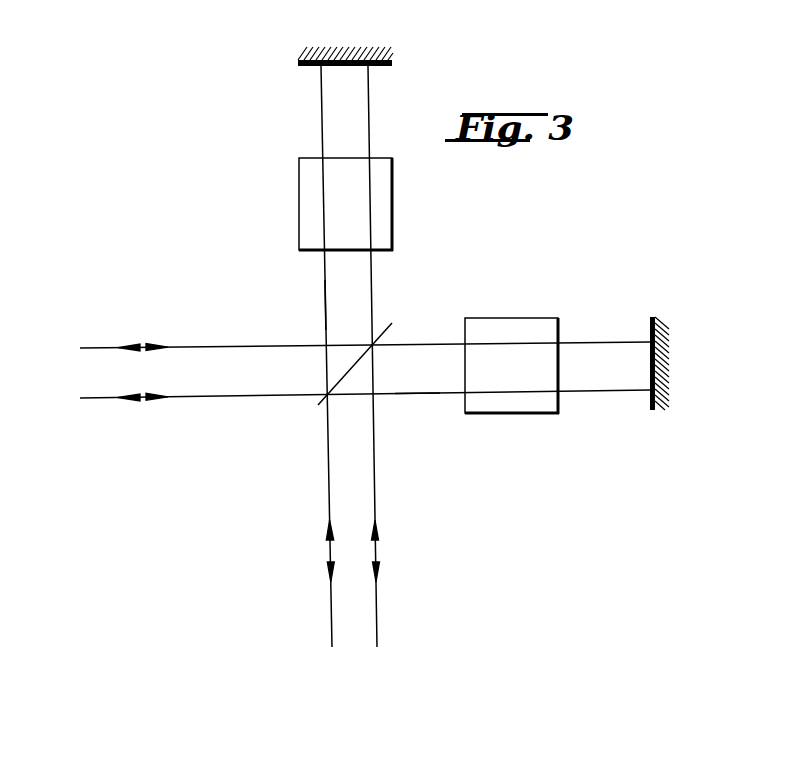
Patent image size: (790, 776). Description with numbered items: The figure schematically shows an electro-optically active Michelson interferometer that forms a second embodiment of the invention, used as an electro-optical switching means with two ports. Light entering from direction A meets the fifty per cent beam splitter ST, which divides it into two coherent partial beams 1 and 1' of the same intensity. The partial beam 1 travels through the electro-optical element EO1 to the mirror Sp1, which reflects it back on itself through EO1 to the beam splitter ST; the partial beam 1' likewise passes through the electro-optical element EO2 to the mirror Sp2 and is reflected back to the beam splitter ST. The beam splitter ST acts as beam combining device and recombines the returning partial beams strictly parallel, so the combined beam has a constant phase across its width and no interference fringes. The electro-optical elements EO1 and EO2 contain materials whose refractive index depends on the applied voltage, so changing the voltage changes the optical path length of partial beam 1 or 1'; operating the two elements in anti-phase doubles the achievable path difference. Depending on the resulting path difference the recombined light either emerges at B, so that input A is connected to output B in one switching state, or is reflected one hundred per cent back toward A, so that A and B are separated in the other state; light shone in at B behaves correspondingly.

The mirror Sp1 is at (342, 48).
The mirror Sp2 is at (656, 361).
The electro-optical element EO1 is at (300, 205).
The electro-optical element EO2 is at (507, 409).
The beam splitter ST is at (320, 408).
The partial beam 1 is at (311, 305).
The partial beam 1' is at (417, 422).
The input/output A is at (348, 375).
The input/output B is at (353, 376).